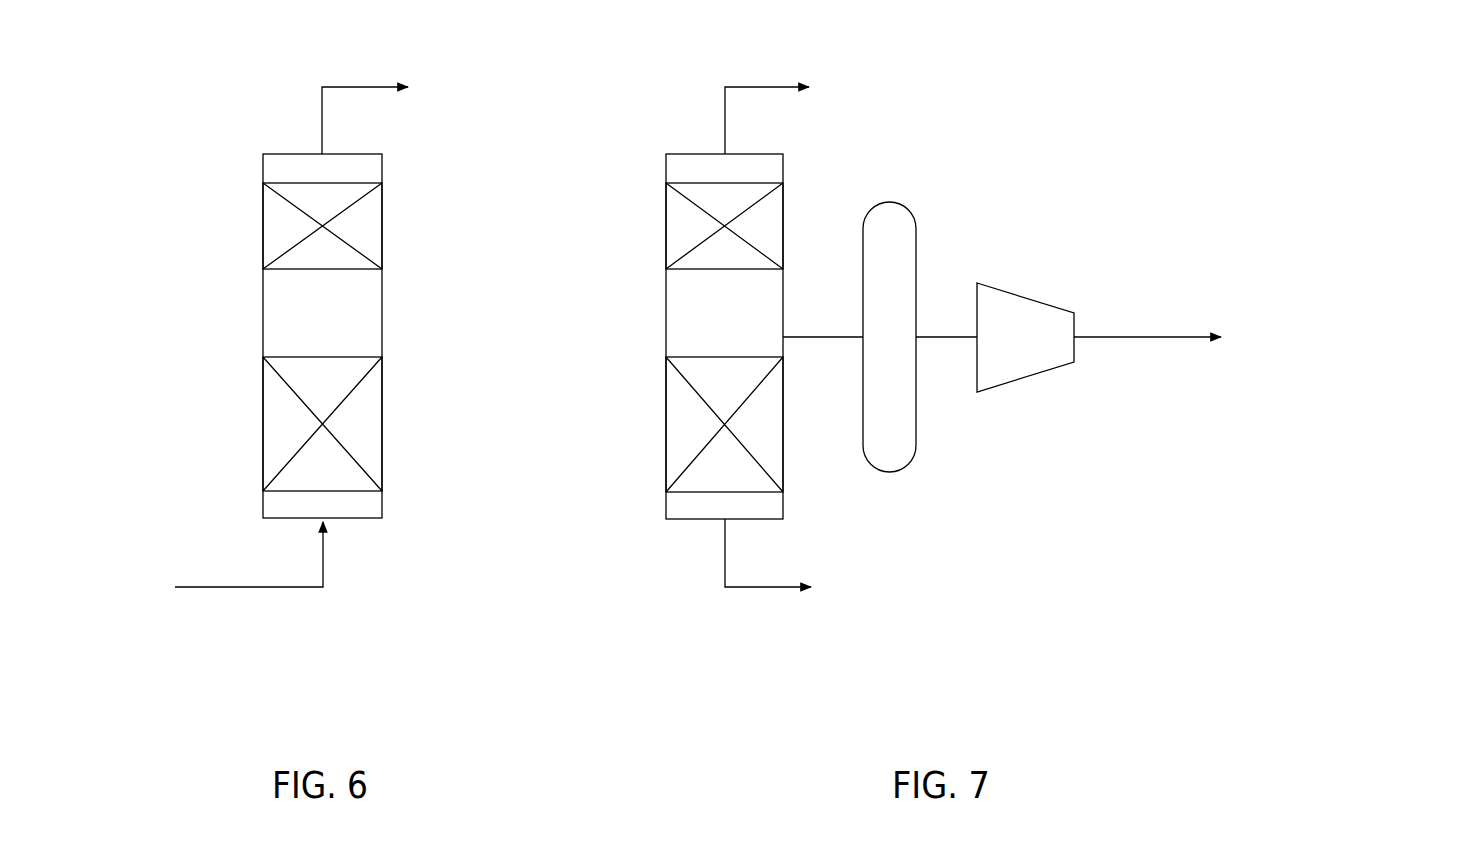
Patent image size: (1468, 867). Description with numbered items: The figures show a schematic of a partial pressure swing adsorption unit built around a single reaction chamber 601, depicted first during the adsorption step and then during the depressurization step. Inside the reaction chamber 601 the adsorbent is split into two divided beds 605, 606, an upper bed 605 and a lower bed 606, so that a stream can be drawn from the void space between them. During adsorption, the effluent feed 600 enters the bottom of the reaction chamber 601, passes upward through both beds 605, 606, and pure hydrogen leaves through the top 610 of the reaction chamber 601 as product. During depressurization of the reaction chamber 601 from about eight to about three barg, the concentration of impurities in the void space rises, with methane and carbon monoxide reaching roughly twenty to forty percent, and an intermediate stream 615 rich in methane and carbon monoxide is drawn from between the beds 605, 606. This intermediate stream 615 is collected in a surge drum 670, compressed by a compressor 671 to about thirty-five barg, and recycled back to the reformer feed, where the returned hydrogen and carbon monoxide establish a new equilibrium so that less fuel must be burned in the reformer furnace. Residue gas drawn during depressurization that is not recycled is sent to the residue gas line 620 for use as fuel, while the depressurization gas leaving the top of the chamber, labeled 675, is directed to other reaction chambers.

In FIG. 6, the effluent feed 600 is at (250, 590).
In FIG. 7, the effluent feed 600 is at (643, 304).
In FIG. 6, the reaction chamber 601 is at (240, 303).
In FIG. 6, the bed 605 is at (278, 231).
In FIG. 7, the bed 605 is at (681, 231).
In FIG. 6, the bed 606 is at (285, 433).
In FIG. 7, the bed 606 is at (688, 433).
In FIG. 6, the top 610 is at (365, 85).
In FIG. 7, the intermediate stream 615 is at (1148, 335).
In FIG. 7, the residue gas line 620 is at (759, 590).
In FIG. 7, the surge drum 670 is at (906, 207).
In FIG. 7, the compressor 671 is at (1025, 298).
In FIG. 7, the depressurization gas stream to other adsorbers 675 is at (752, 85).